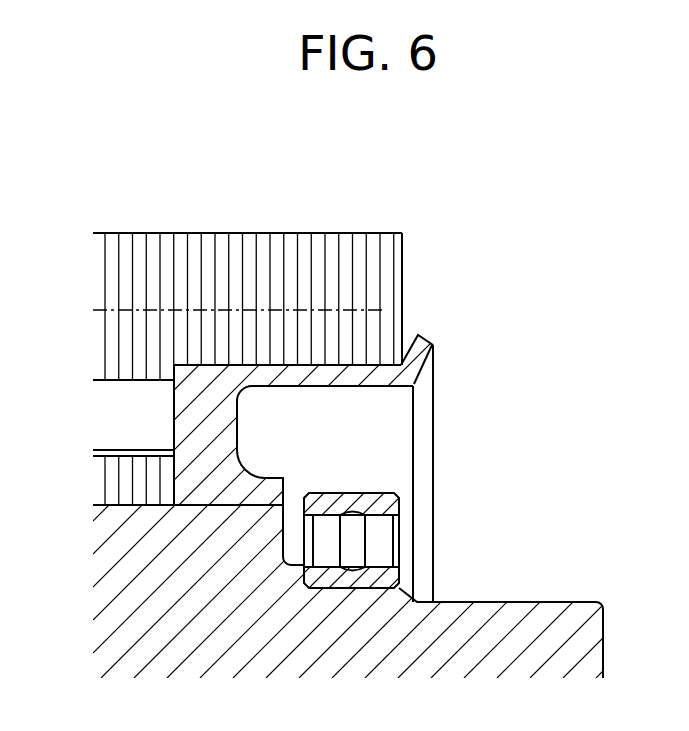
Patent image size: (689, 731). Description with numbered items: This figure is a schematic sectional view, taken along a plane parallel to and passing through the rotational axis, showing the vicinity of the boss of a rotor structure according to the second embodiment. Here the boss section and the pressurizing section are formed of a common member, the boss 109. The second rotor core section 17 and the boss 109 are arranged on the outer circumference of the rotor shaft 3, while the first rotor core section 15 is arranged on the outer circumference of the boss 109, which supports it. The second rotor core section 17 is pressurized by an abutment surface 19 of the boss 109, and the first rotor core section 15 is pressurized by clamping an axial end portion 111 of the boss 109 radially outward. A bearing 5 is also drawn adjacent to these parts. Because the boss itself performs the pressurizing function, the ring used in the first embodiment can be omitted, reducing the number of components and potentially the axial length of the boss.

The rotor shaft 3 is at (552, 613).
The bearing 5 is at (392, 501).
The first rotor core section 15 is at (289, 233).
The second rotor core section 17 is at (124, 233).
The abutment surface 19 is at (174, 416).
The boss 109 is at (388, 437).
The axial end portion 111 is at (438, 342).